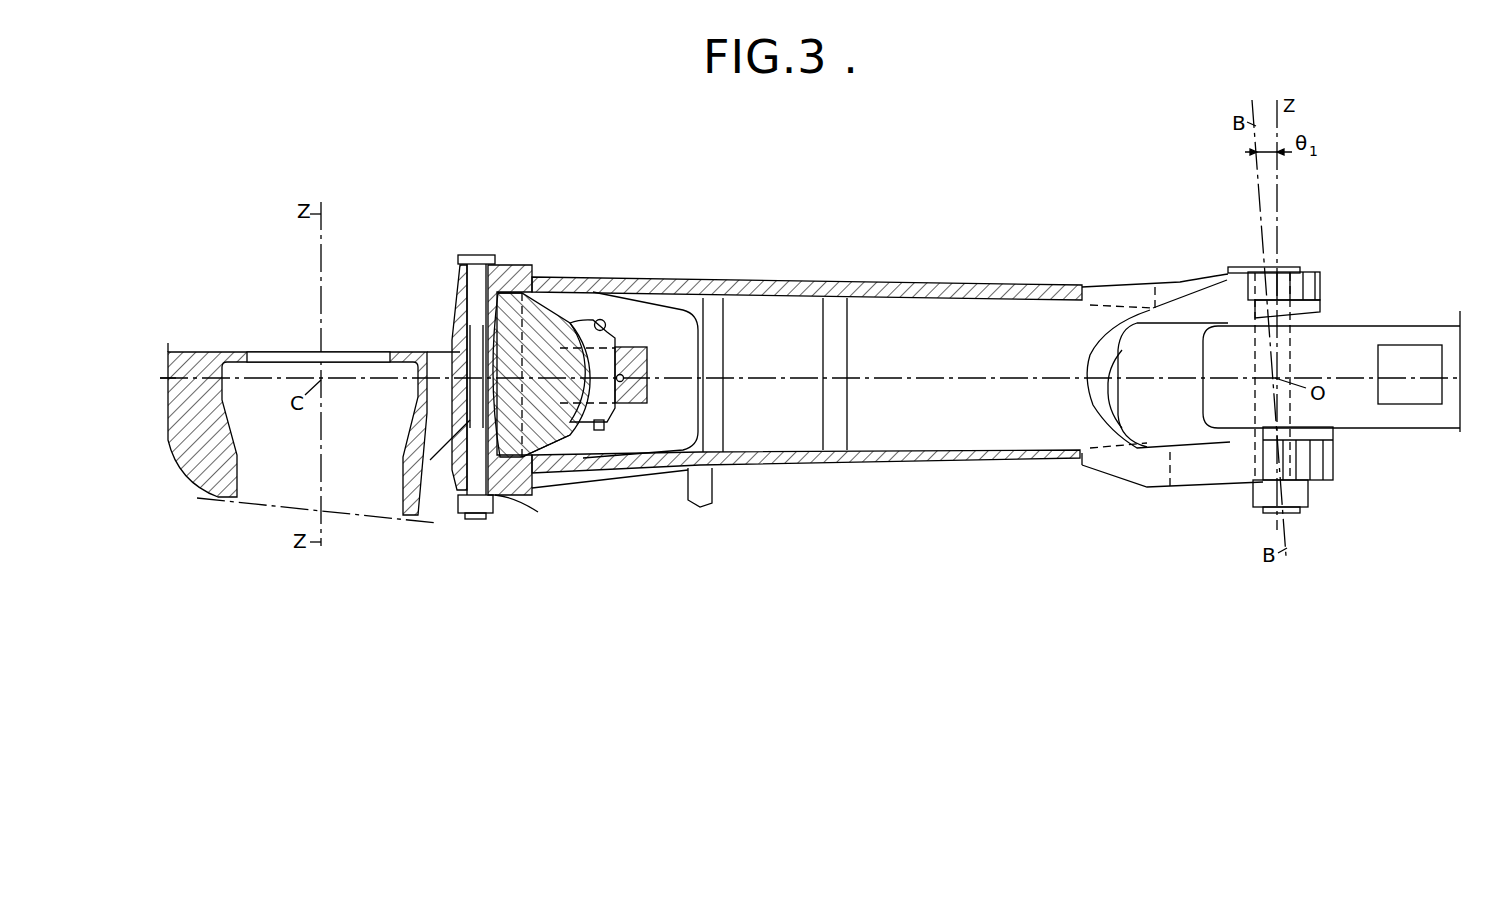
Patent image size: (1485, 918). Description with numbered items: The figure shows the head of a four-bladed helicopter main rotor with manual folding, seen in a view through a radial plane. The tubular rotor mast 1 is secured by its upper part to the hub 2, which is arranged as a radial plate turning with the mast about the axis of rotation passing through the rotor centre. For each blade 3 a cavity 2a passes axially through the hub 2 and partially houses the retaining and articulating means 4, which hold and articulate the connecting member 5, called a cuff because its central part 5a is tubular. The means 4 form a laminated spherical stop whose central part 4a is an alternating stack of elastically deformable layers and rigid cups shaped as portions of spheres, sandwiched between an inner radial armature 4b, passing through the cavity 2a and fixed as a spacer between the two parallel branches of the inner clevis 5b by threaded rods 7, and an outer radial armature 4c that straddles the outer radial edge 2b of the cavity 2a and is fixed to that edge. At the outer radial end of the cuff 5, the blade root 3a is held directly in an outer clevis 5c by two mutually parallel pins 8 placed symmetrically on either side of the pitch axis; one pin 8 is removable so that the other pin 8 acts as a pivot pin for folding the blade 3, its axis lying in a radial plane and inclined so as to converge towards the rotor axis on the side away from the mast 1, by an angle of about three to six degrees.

The rotor mast 1 is at (228, 494).
The hub 2 is at (216, 455).
The cavity 2a is at (443, 367).
The outer radial edge 2b is at (647, 352).
The blade 3 is at (1417, 328).
The blade root 3a is at (1356, 410).
The retaining and articulating means 4 is at (549, 305).
The central part 4a is at (540, 430).
The inner radial armature 4b is at (503, 470).
The outer radial armature 4c is at (589, 407).
The connecting member 5 is at (745, 471).
The central part 5a is at (825, 290).
The inner clevis 5b is at (606, 280).
The outer clevis 5c is at (1212, 312).
The threaded rods 7 is at (478, 255).
The pins 8 is at (1283, 357).